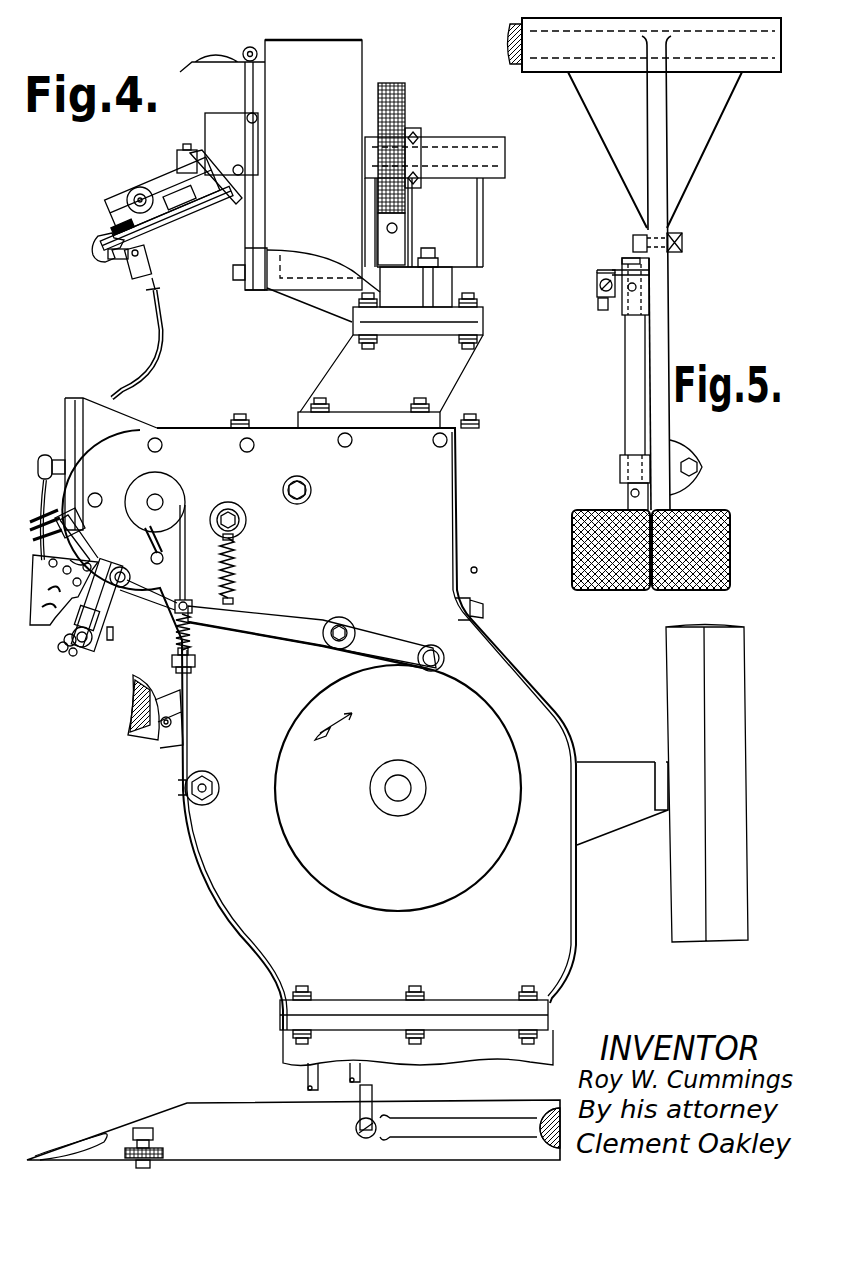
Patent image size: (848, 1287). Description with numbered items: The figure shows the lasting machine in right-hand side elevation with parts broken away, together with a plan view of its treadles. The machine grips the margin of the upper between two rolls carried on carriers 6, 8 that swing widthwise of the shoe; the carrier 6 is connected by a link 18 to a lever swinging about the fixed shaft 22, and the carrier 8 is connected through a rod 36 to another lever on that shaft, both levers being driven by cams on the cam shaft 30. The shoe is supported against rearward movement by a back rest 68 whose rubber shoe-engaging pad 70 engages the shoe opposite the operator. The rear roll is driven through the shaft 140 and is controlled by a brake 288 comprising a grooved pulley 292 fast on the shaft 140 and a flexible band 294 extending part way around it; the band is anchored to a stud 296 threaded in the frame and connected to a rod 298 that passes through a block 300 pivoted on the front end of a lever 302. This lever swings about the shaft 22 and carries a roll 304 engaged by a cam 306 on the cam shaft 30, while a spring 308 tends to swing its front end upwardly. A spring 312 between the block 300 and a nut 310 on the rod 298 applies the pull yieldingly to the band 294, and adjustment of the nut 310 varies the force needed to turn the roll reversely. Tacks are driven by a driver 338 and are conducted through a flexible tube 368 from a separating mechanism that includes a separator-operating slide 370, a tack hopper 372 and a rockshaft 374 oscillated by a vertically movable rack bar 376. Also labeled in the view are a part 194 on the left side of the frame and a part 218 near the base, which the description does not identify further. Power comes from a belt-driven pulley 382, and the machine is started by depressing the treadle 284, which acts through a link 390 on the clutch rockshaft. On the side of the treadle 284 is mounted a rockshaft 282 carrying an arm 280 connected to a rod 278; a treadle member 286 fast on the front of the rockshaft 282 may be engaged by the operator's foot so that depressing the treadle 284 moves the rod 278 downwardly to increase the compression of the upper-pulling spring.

In FIG. 4, the tack hopper 372 is at (362, 46).
In FIG. 4, the rack bar 376 is at (405, 95).
In FIG. 4, the rockshaft 374 is at (440, 150).
In FIG. 4, the separator-operating slide 370 is at (160, 248).
In FIG. 4, the flexible tube 368 is at (163, 325).
In FIG. 4, the knob 194 is at (42, 455).
In FIG. 4, the rod 36 is at (35, 514).
In FIG. 4, the grooved pulley 292 is at (160, 480).
In FIG. 4, the shaft 140 is at (160, 500).
In FIG. 4, the brake 288 is at (192, 494).
In FIG. 4, the driver 338 is at (75, 555).
In FIG. 4, the stud 296 is at (150, 557).
In FIG. 4, the flexible band 294 is at (184, 560).
In FIG. 4, the spring 308 is at (234, 566).
In FIG. 4, the carrier 8 is at (33, 580).
In FIG. 4, the carrier 6 is at (110, 597).
In FIG. 4, the link 18 is at (148, 614).
In FIG. 4, the block 300 is at (178, 640).
In FIG. 4, the rod 298 is at (194, 606).
In FIG. 4, the spring 312 is at (192, 640).
In FIG. 4, the nut 310 is at (196, 667).
In FIG. 4, the shoe-engaging pad 70 is at (128, 710).
In FIG. 4, the back rest 68 is at (136, 750).
In FIG. 4, the fixed shaft 22 is at (342, 619).
In FIG. 4, the lever 302 is at (292, 638).
In FIG. 4, the roll 304 is at (445, 657).
In FIG. 4, the cam 306 is at (478, 703).
In FIG. 4, the cam shaft 30 is at (405, 778).
In FIG. 4, the treadle 284 is at (195, 1118).
In FIG. 5, the treadle 284 is at (668, 322).
In FIG. 4, the tabs 218 is at (300, 1090).
In FIG. 4, the link 390 is at (374, 1082).
In FIG. 5, the link 390 is at (683, 242).
In FIG. 4, the belt-driven pulley 382 is at (676, 940).
In FIG. 5, the rod 278 is at (597, 285).
In FIG. 5, the arm 280 is at (612, 303).
In FIG. 5, the rockshaft 282 is at (630, 385).
In FIG. 5, the treadle member 286 is at (575, 515).